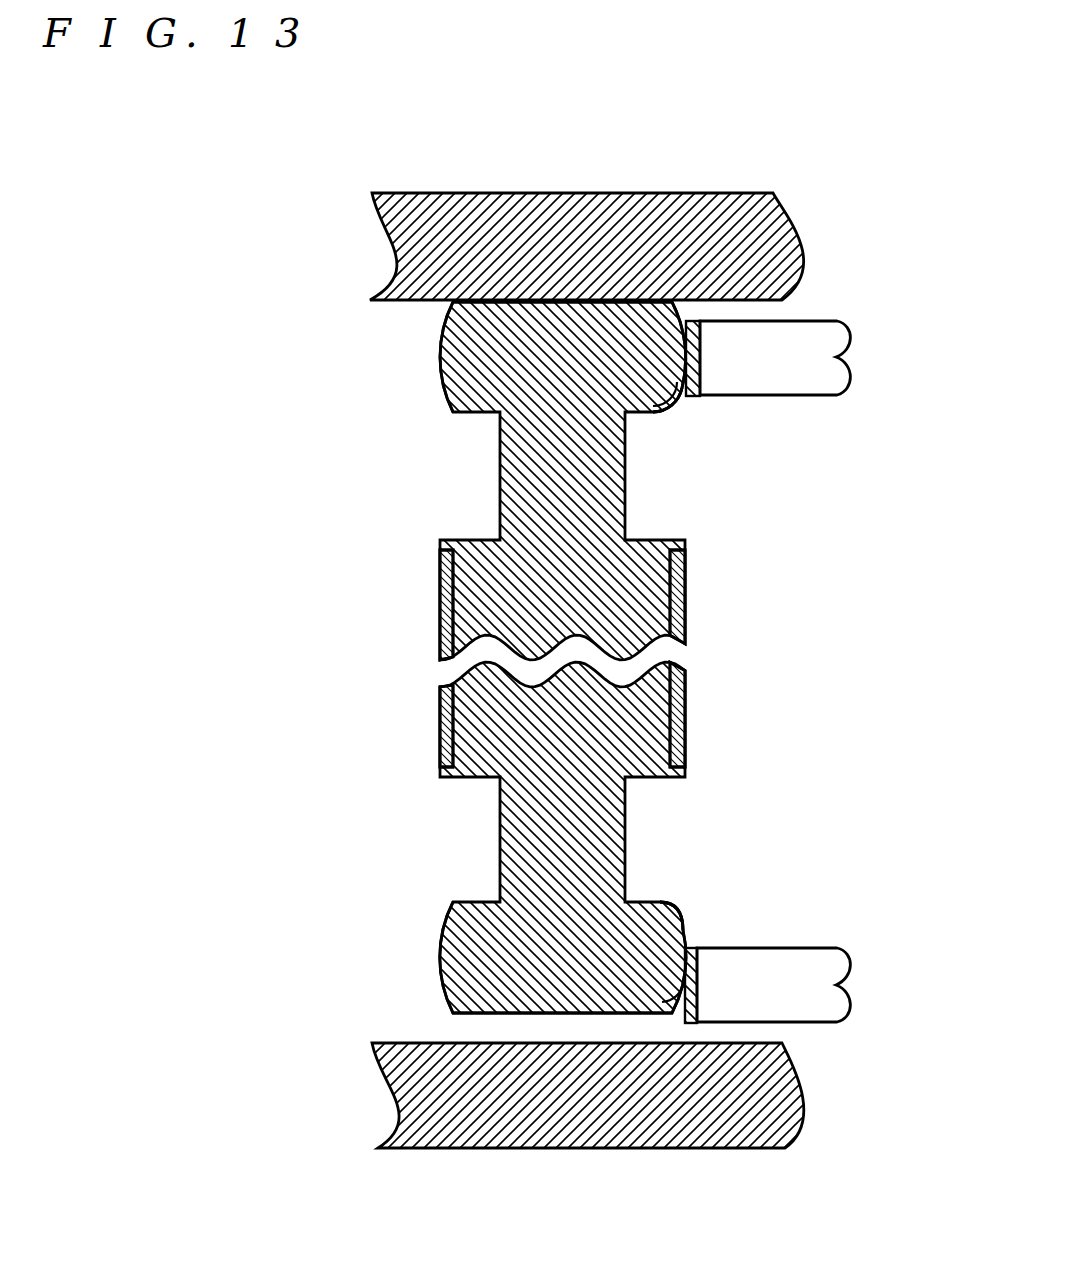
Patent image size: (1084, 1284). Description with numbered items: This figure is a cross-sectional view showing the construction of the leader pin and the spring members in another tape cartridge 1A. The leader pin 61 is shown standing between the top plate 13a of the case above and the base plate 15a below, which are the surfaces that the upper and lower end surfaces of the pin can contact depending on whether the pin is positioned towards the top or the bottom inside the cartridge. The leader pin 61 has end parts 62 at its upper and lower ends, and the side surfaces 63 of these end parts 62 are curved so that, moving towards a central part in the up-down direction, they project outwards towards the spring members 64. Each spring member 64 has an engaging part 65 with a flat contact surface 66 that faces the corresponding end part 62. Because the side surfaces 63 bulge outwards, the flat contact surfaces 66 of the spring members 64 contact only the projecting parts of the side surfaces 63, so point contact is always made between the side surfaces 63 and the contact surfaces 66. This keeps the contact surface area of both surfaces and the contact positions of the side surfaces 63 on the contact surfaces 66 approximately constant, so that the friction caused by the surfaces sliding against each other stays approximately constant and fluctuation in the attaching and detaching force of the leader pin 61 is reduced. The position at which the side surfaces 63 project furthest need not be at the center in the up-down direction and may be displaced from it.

The tape cartridge 1A is at (265, 193).
The top plate 13a is at (395, 256).
The base plate 15a is at (397, 1085).
The leader pin 61 is at (370, 580).
The end parts 62 is at (443, 358).
The side surfaces 63 is at (673, 410).
The spring members 64 is at (823, 358).
The engaging parts 65 is at (700, 360).
The contact surfaces 66 is at (678, 398).